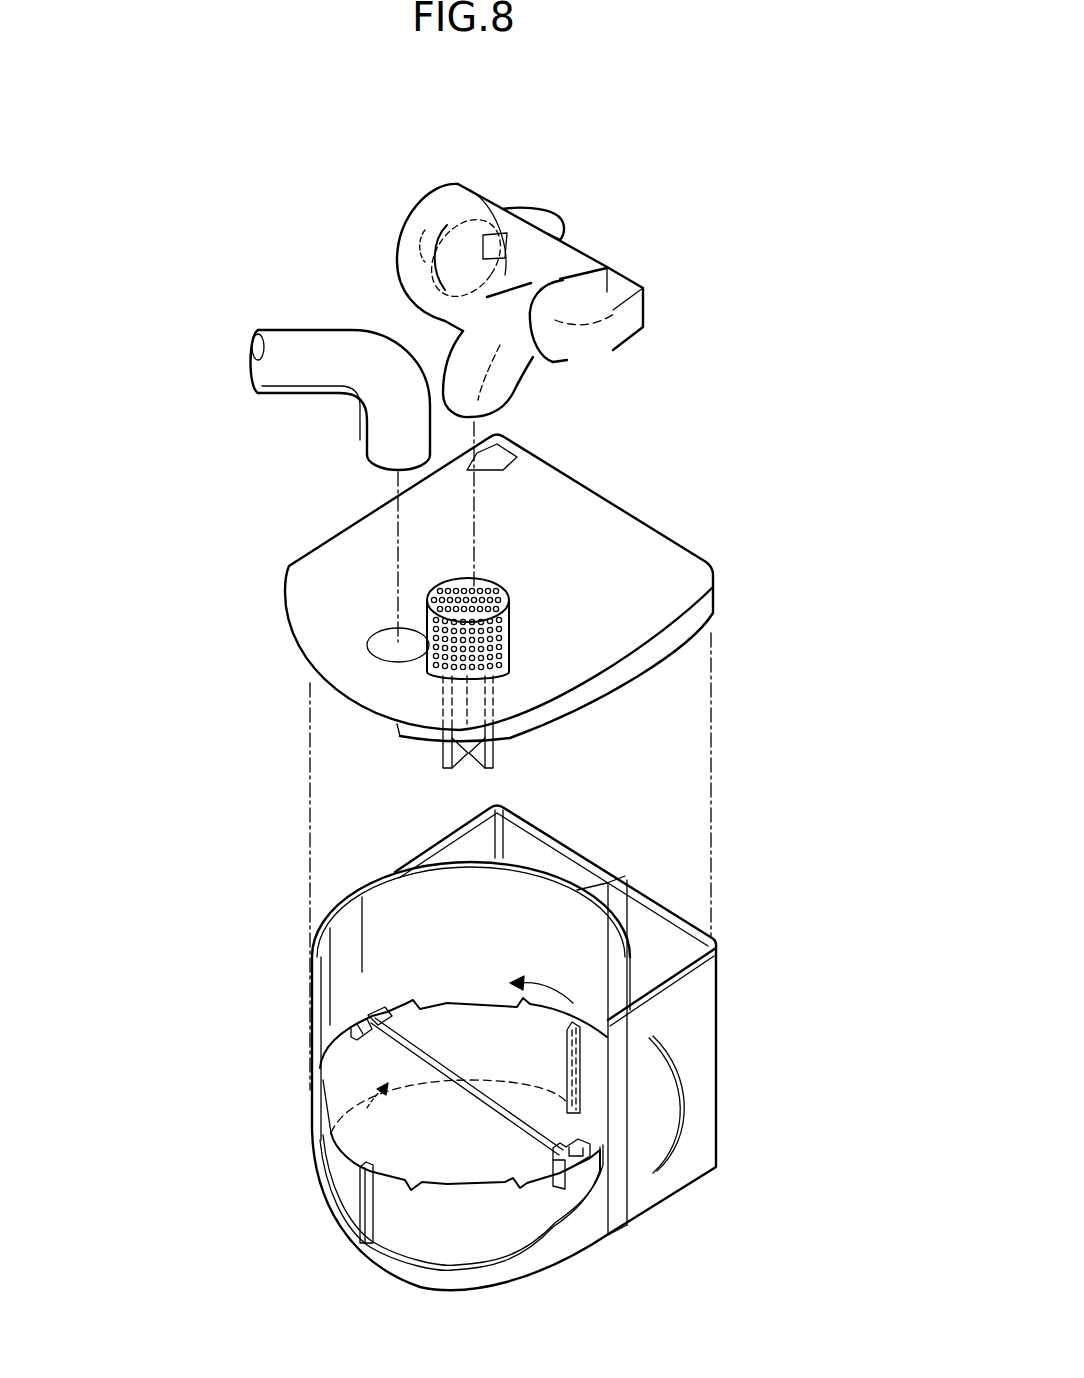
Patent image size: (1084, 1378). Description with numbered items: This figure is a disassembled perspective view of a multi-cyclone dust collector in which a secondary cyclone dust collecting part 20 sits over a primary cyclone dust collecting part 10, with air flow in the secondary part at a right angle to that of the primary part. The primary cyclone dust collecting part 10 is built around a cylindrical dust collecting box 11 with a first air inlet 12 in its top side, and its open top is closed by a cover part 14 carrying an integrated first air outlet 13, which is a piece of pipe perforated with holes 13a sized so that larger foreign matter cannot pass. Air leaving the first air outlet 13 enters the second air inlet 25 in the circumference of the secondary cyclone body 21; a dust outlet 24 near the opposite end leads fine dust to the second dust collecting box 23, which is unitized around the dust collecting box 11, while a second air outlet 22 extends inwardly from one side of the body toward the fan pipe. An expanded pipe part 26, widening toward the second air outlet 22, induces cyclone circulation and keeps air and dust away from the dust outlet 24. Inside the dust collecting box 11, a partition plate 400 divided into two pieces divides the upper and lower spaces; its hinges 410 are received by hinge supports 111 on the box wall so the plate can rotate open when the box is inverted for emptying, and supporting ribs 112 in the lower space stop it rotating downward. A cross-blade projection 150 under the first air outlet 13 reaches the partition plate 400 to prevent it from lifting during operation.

The primary cyclone dust collecting part 10 is at (747, 392).
The dust collecting box 11 is at (563, 1240).
The first air inlet 12 is at (312, 344).
The first air outlet 13 is at (478, 593).
The holes 13a is at (485, 598).
The cover part 14 is at (633, 650).
The secondary cyclone dust collecting part 20 is at (406, 205).
The secondary cyclone body 21 is at (560, 267).
The second air outlet 22 is at (620, 268).
The second dust collecting box 23 is at (700, 1108).
The dust outlet 24 is at (543, 214).
The second air inlet 25 is at (503, 386).
The expanded pipe part 26 is at (460, 222).
The hinge supports 111 is at (352, 1018).
The supporting ribs 112 is at (367, 1197).
The projection 150 is at (494, 752).
The partition plate 400 is at (347, 1093).
The hinges 410 is at (370, 1016).